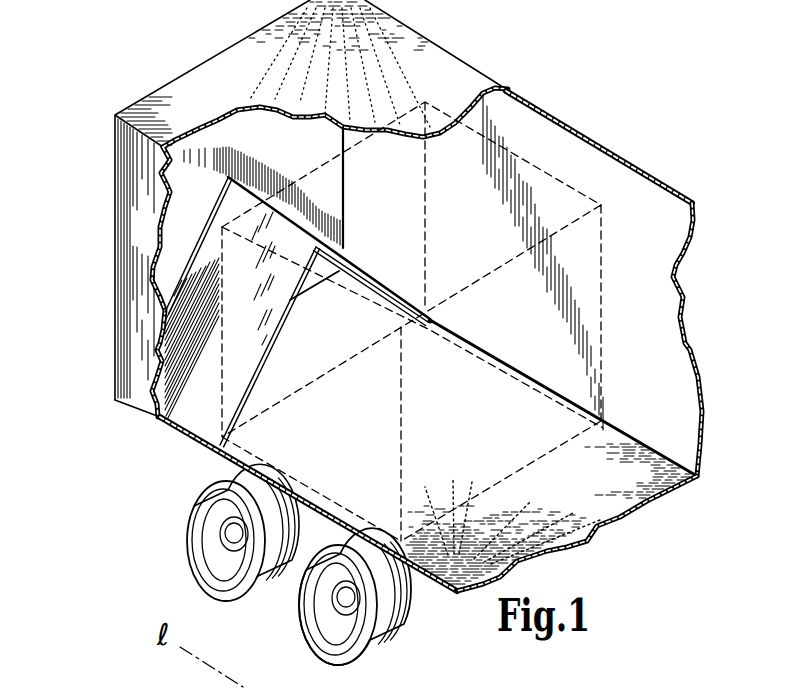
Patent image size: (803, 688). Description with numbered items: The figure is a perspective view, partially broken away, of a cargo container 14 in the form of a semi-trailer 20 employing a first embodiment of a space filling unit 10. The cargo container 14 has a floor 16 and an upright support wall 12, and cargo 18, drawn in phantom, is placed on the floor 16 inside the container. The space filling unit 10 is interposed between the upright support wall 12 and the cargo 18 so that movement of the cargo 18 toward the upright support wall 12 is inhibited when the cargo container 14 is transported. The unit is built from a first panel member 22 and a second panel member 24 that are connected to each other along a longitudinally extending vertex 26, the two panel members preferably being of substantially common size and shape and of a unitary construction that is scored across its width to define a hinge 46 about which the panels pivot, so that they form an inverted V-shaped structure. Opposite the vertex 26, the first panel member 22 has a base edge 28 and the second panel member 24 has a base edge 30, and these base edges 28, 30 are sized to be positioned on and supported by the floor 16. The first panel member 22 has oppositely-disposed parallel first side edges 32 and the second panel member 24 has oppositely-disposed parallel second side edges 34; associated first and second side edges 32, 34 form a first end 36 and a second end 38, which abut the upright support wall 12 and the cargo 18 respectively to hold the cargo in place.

The space filling unit 10 is at (193, 430).
The upright support wall 12 is at (240, 133).
The cargo container 14 is at (447, 63).
The floor 16 is at (597, 516).
The cargo 18 is at (588, 333).
The semi-trailer 20 is at (460, 88).
The first panel member 22 is at (153, 422).
The second panel member 24 is at (387, 305).
The longitudinally extending vertex 26 is at (293, 192).
The base edge 28 is at (212, 445).
The base edge 30 is at (430, 321).
The first side edges 32 is at (182, 270).
The second side edges 34 is at (390, 299).
The first end 36 is at (379, 256).
The second end 38 is at (191, 222).
The hinge 46 is at (300, 212).